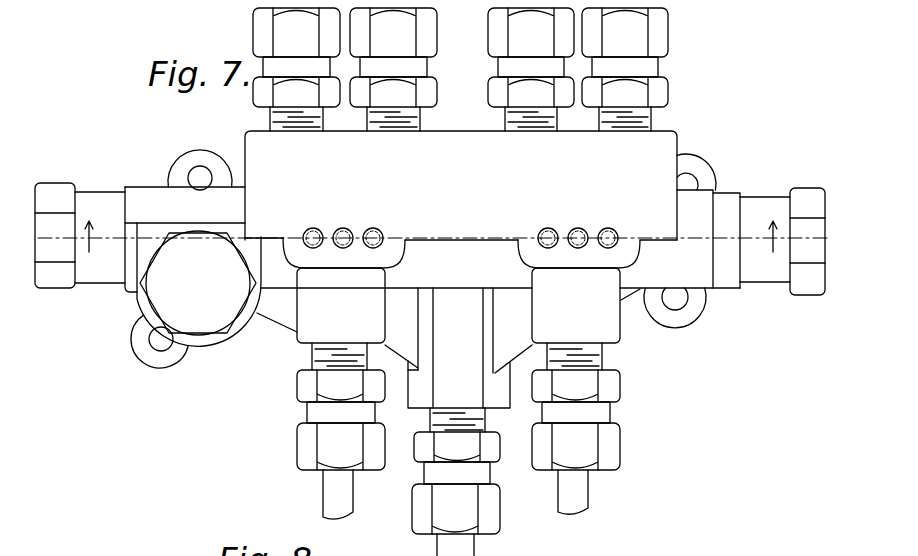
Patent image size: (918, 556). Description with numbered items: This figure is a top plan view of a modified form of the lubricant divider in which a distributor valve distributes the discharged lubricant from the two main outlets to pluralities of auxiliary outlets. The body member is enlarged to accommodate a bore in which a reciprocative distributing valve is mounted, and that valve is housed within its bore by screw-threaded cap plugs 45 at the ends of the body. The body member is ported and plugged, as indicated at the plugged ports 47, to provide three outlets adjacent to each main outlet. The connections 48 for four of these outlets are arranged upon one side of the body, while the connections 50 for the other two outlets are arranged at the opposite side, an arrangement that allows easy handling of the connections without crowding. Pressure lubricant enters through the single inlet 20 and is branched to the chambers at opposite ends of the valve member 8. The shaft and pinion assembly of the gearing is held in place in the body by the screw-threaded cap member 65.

The connections 48 is at (262, 27).
The screw-threaded cap plugs 45 is at (107, 197).
The valve member 8 is at (431, 253).
The plugged ports 47 is at (316, 228).
The screw-threaded cap member 65 is at (158, 288).
The connections 50 is at (297, 449).
The single inlet 20 is at (422, 395).